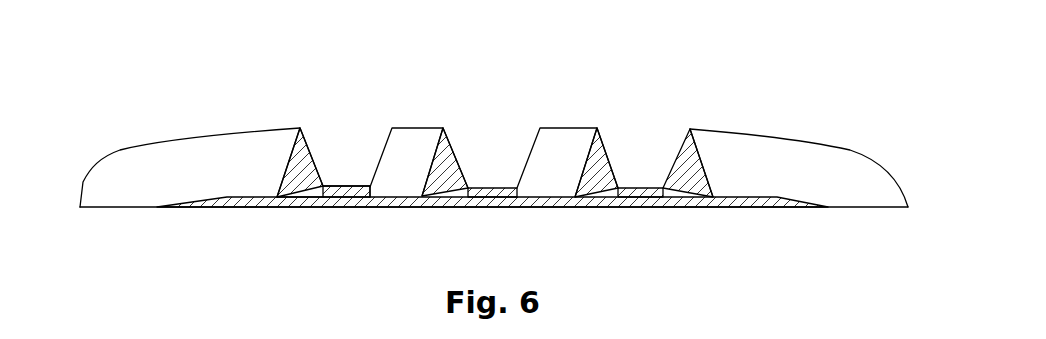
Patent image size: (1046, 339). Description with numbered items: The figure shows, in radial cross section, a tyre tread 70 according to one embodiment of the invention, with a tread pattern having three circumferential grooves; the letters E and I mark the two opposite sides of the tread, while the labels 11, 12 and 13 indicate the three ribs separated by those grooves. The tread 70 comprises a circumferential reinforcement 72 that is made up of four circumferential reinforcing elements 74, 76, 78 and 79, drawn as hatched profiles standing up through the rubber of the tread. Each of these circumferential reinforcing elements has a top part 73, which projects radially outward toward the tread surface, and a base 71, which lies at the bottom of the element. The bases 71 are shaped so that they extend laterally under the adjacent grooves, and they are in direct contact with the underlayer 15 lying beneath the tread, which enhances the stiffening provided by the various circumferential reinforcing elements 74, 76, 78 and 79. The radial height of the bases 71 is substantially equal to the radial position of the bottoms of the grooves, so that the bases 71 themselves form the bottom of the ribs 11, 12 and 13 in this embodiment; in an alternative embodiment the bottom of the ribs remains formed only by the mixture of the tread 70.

The exterior side E is at (128, 127).
The interior side I is at (872, 128).
The tread 70 is at (313, 83).
The first prism structure 11 is at (338, 157).
The second prism structure 12 is at (480, 156).
The third prism structure 13 is at (643, 153).
The underlayer 15 is at (253, 202).
The bases 71 is at (340, 190).
The circumferential reinforcement 72 is at (688, 230).
The top parts 73 is at (295, 153).
The circumferential reinforcing element 74 is at (437, 170).
The circumferential reinforcing element 76 is at (302, 190).
The circumferential reinforcing element 78 is at (598, 190).
The circumferential reinforcing element 79 is at (713, 186).